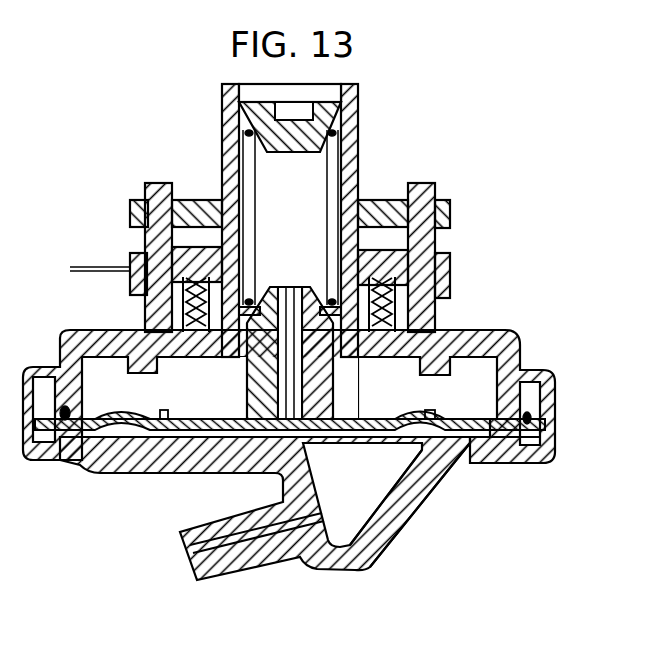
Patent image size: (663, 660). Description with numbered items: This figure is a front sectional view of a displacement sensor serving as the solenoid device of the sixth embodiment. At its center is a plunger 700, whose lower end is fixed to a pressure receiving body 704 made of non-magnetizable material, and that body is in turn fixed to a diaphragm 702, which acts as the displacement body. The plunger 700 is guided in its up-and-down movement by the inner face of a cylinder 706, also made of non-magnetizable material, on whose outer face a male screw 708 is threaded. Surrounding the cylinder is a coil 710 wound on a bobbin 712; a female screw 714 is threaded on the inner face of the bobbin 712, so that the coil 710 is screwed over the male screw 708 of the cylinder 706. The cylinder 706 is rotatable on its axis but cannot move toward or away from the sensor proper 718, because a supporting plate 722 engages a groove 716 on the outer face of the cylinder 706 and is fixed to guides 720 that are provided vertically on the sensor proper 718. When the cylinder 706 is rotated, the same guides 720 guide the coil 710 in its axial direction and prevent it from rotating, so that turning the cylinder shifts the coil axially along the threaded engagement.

The plunger 700 is at (242, 398).
The diaphragm 702 is at (437, 445).
The pressure receiving body 704 is at (426, 473).
The cylinder 706 is at (362, 97).
The male screw 708 is at (372, 200).
The coil 710 is at (192, 310).
The bobbin 712 is at (393, 248).
The female screw 714 is at (222, 254).
The groove 716 is at (222, 198).
The sensor proper 718 is at (512, 342).
The guides 720 is at (157, 183).
The supporting plate 722 is at (128, 212).